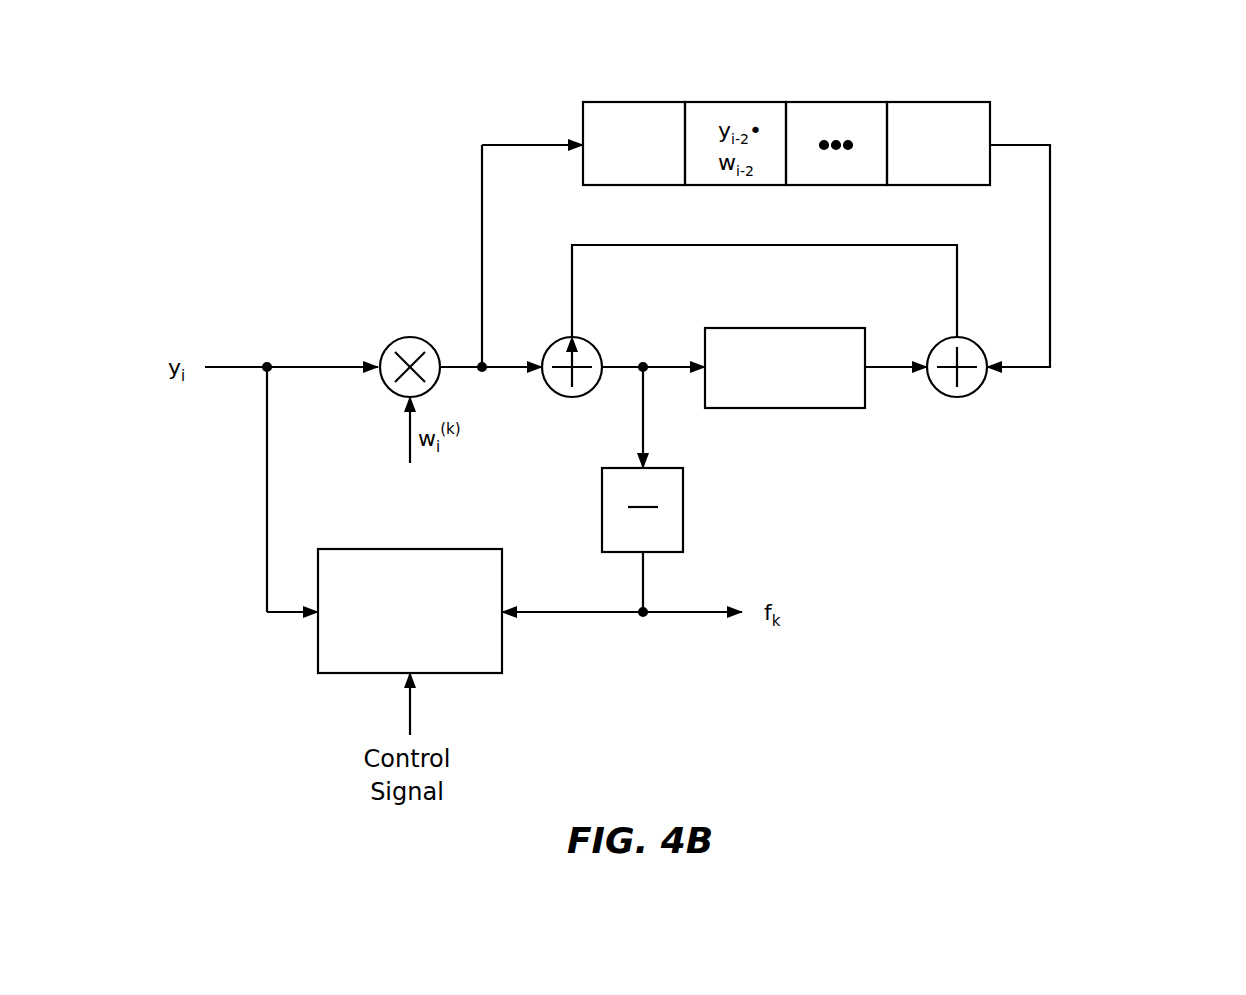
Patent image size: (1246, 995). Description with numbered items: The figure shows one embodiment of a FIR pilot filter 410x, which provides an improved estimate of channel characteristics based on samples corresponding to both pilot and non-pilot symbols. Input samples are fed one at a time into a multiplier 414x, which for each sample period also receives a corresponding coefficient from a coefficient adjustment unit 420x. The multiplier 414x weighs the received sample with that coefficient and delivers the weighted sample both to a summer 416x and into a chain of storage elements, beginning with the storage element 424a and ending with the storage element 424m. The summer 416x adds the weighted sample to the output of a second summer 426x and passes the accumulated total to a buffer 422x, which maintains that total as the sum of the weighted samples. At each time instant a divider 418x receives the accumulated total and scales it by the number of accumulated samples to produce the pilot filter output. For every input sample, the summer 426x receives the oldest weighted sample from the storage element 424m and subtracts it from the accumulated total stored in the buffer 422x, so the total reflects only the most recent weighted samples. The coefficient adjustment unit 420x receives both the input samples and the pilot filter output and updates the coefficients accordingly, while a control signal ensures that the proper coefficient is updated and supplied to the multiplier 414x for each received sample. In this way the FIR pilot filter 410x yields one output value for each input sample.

The FIR pilot filter 410x is at (1202, 65).
The multiplier 414x is at (406, 336).
The summer 416x is at (610, 330).
The divider 418x is at (684, 512).
The coefficient adjustment unit 420x is at (458, 548).
The buffer 422x is at (778, 327).
The storage element 424a is at (628, 101).
The storage element 424m is at (942, 85).
The summer 426x is at (994, 330).